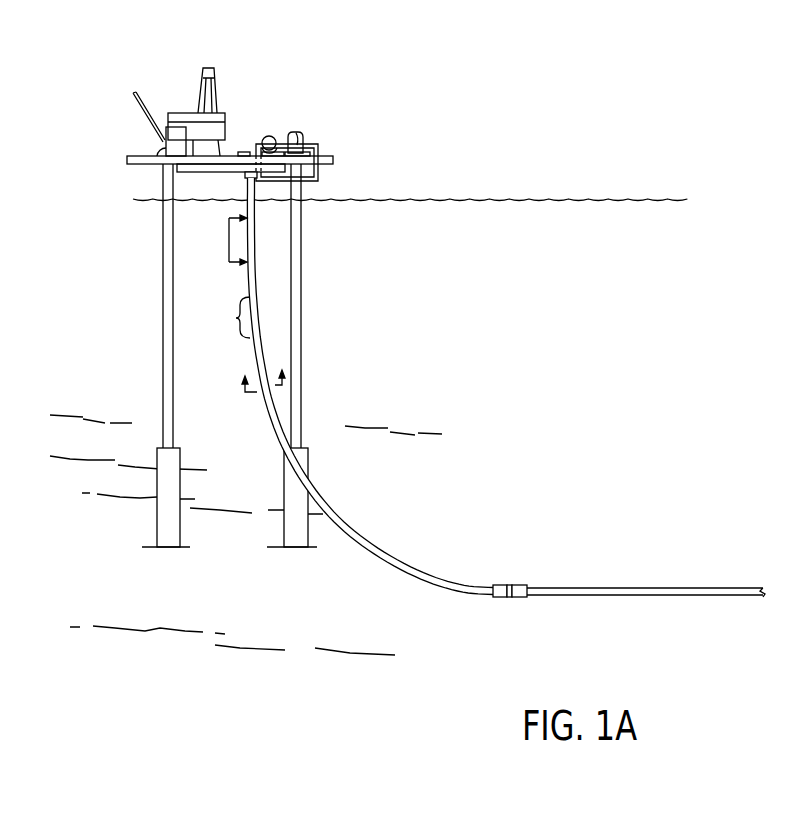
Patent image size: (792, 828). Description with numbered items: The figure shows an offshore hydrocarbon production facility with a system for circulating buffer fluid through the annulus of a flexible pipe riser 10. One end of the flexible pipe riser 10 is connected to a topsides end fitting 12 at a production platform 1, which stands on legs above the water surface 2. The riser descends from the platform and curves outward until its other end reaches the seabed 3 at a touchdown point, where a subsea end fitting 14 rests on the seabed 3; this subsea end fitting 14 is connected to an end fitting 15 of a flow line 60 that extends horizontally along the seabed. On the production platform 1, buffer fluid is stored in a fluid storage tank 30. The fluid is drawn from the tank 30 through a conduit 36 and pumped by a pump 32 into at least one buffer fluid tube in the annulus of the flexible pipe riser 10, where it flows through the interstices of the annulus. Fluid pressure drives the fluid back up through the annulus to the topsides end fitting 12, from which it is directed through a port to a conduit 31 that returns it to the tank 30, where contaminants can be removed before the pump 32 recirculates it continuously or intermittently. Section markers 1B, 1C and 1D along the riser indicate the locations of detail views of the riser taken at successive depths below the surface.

The production platform 1 is at (110, 127).
The sea surface 2 is at (478, 199).
The seabed 3 is at (113, 626).
The flexible pipe riser 10 is at (312, 491).
The topsides end fitting 12 is at (256, 184).
The subsea end fitting 14 is at (497, 585).
The end fitting 15 is at (517, 585).
The fluid storage tank 30 is at (300, 131).
The conduit 31 is at (318, 140).
The pump 32 is at (268, 136).
The conduit 36 is at (283, 141).
The flow line 60 is at (666, 588).
The section 1B is at (226, 240).
The section 1C is at (230, 317).
The section 1D is at (262, 371).